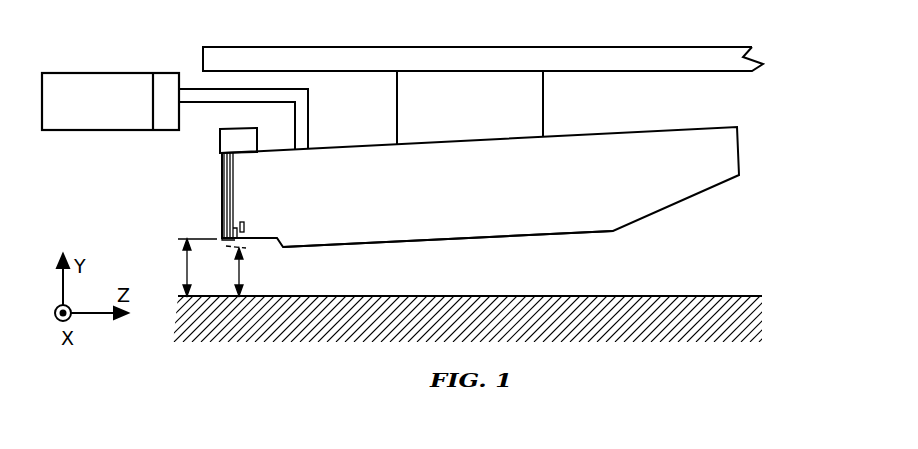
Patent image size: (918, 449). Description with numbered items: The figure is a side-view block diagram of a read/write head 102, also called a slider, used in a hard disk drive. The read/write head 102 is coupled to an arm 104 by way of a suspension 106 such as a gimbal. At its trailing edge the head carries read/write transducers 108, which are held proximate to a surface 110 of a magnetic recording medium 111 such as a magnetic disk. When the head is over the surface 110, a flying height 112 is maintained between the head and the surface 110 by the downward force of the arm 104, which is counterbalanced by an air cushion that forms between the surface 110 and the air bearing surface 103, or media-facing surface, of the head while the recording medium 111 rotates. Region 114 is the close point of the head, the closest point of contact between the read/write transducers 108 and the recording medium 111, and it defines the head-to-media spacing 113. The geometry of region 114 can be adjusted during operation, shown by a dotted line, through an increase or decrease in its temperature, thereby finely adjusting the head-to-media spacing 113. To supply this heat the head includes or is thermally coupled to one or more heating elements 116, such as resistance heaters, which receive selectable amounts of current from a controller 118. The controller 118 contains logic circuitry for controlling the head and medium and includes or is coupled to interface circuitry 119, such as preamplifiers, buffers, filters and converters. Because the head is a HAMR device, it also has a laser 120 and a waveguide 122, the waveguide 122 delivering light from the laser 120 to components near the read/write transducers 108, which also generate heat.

The read/write head 102 is at (650, 138).
The air bearing surface 103 is at (363, 247).
The arm 104 is at (693, 52).
The suspension 106 is at (543, 100).
The read/write transducers 108 is at (238, 226).
The surface 110 is at (655, 296).
The magnetic recording medium 111 is at (665, 335).
The flying height 112 is at (182, 267).
The head-to-media spacing 113 is at (223, 272).
The region 114 is at (246, 250).
The heating elements 116 is at (245, 228).
The controller 118 is at (95, 72).
The interface circuitry 119 is at (165, 72).
The laser 120 is at (237, 135).
The waveguide 122 is at (224, 172).